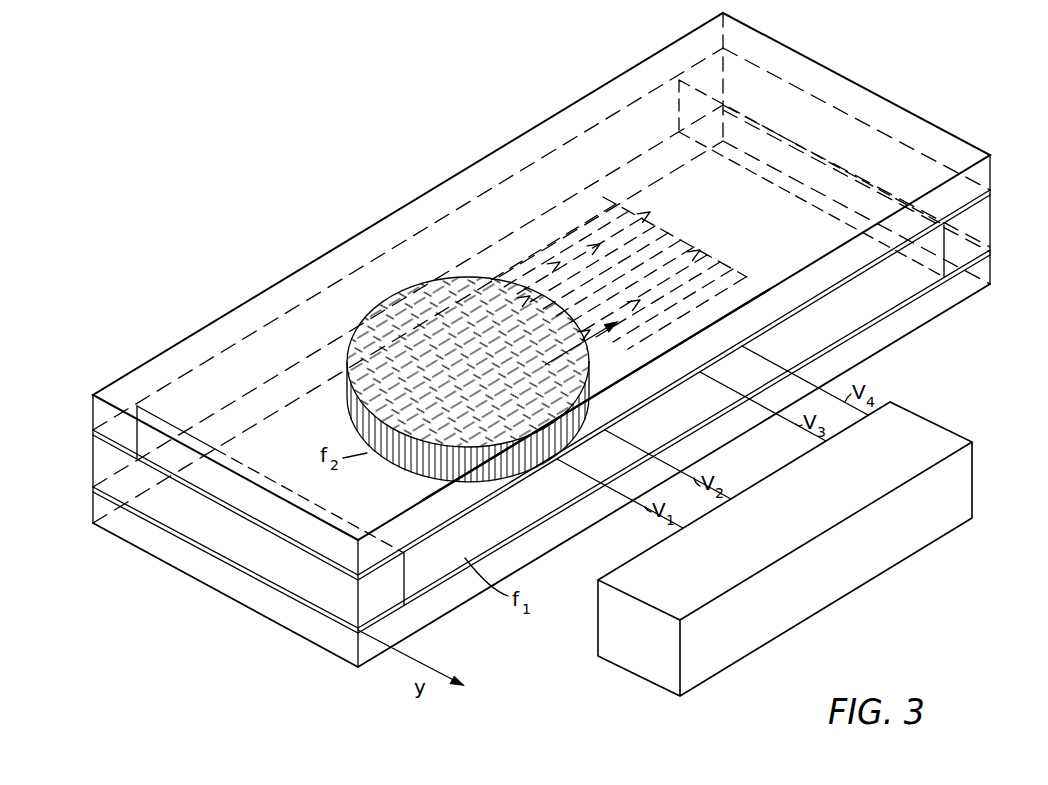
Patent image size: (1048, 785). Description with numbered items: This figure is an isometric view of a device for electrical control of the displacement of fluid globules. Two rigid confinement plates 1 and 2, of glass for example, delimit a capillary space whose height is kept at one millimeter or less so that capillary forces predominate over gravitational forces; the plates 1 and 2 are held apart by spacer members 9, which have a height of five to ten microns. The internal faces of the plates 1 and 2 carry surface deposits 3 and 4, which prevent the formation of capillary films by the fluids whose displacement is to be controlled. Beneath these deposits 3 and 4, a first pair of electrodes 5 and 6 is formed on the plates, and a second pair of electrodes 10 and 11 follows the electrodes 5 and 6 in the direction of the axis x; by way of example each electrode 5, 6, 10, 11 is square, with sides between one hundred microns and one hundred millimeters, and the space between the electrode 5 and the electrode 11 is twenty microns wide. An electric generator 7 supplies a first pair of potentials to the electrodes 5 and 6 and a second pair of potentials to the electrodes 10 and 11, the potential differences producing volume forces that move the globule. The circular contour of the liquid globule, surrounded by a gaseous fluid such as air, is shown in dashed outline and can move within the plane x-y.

The confinement plate 1 is at (918, 130).
The confinement plate 2 is at (962, 295).
The surface deposit 3 is at (853, 278).
The surface deposit 4 is at (926, 292).
The electrode 5 is at (345, 355).
The electrode 6 is at (345, 405).
The electric generator 7 is at (935, 425).
The spacer member 9 is at (982, 220).
The electrode 10 is at (738, 312).
The electrode 11 is at (680, 241).